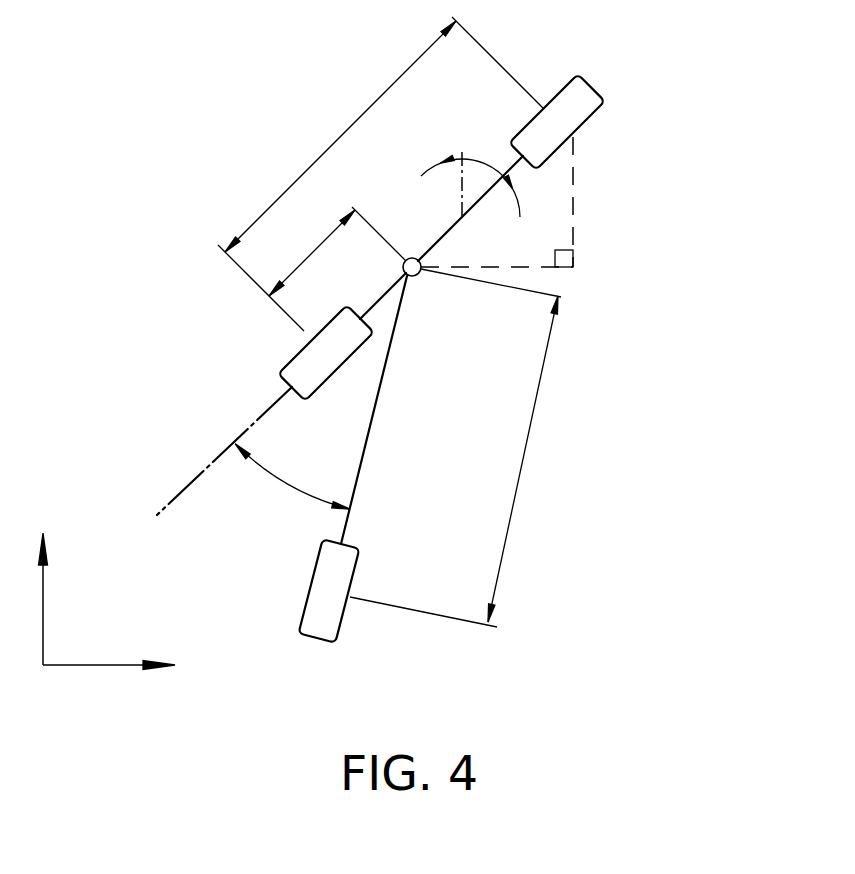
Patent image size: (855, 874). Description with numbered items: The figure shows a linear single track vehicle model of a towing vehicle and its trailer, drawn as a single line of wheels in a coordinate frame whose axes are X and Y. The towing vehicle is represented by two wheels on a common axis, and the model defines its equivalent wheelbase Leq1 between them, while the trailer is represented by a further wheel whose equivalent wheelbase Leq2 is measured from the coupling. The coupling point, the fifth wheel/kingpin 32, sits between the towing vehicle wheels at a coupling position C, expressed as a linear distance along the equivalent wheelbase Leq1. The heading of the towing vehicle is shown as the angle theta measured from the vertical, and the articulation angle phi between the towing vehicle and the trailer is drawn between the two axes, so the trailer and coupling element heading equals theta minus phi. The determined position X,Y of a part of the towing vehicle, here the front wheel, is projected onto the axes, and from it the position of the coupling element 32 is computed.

The fifth wheel/kingpin 32 is at (423, 273).
The determined position of a part of the towing vehicle X,Y is at (590, 123).
The equivalent wheelbase of the towing vehicle Leq1 is at (381, 174).
The equivalent wheelbase of the trailer Leq2 is at (463, 448).
The coupling position C is at (337, 251).
The X coordinate axis X is at (109, 689).
The Y coordinate axis Y is at (62, 598).